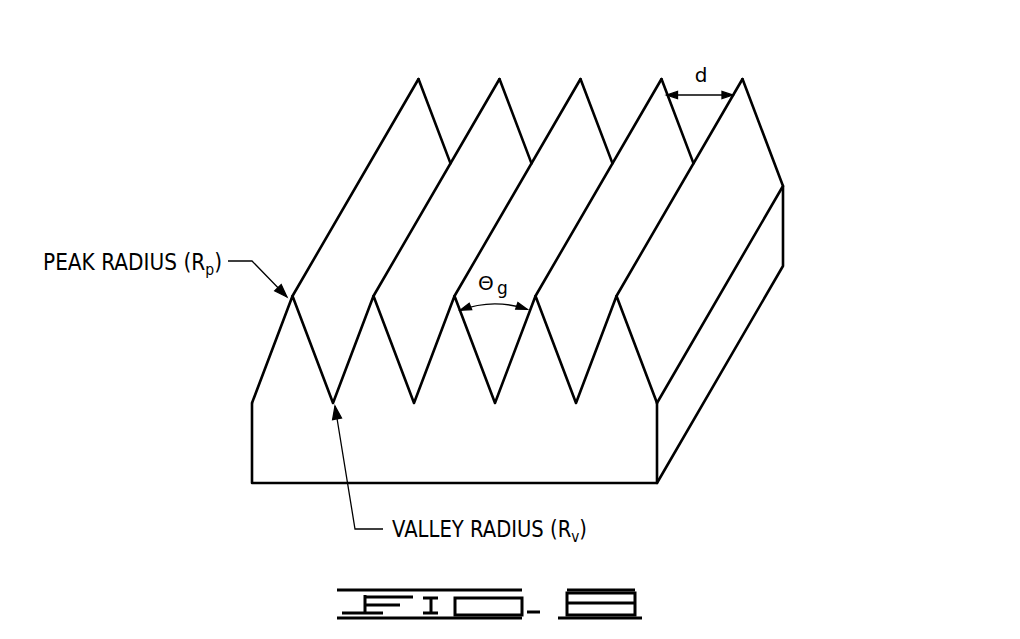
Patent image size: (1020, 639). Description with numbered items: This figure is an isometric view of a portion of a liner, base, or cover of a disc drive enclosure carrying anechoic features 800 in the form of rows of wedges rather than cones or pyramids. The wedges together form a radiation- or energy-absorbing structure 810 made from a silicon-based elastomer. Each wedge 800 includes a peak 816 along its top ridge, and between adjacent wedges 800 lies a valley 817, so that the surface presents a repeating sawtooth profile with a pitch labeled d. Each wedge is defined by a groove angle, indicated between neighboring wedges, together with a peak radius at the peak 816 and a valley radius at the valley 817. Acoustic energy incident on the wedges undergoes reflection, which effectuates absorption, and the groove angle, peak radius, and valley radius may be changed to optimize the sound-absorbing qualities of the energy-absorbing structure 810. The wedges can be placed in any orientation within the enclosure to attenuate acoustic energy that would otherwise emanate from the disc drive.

The anechoic features 800 is at (742, 167).
The energy-absorbing structure 810 is at (223, 340).
The peak 816 is at (370, 160).
The valley 817 is at (451, 160).